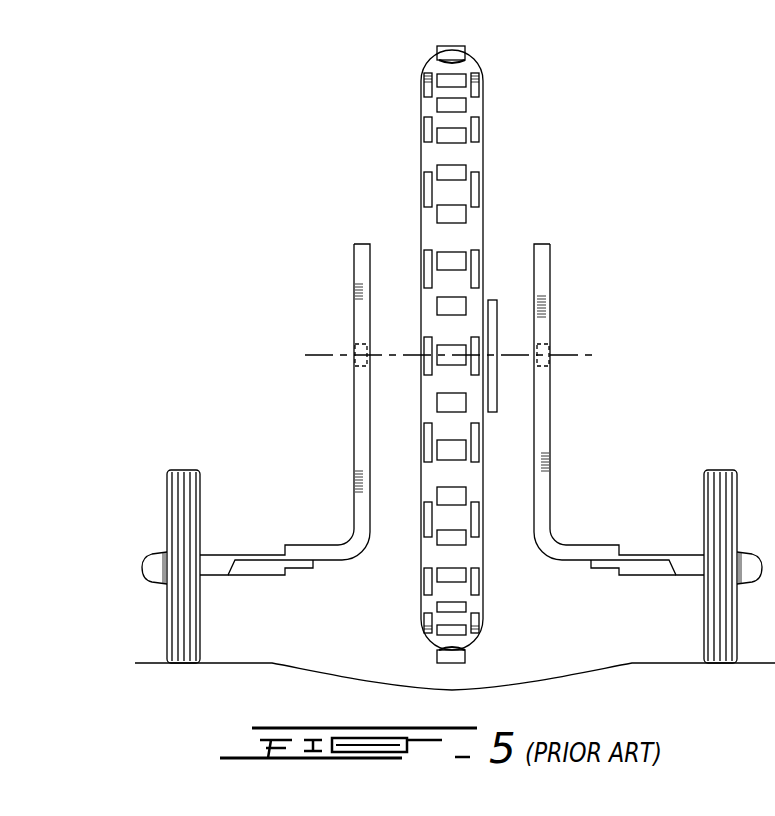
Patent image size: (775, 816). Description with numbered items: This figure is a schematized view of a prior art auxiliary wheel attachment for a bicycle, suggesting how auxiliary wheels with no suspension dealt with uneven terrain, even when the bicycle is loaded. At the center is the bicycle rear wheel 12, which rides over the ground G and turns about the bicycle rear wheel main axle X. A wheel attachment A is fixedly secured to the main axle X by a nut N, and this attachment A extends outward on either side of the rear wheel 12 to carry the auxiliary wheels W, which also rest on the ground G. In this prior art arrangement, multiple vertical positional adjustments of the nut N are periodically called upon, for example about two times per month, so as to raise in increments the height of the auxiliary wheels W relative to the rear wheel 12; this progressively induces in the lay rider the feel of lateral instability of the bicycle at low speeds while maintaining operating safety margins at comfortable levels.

The rear wheel 12 is at (452, 585).
The bicycle rear wheel main axle X is at (517, 355).
The wheel attachment A is at (353, 457).
The nut N is at (357, 347).
The auxiliary wheels W is at (173, 468).
The ground G is at (574, 678).